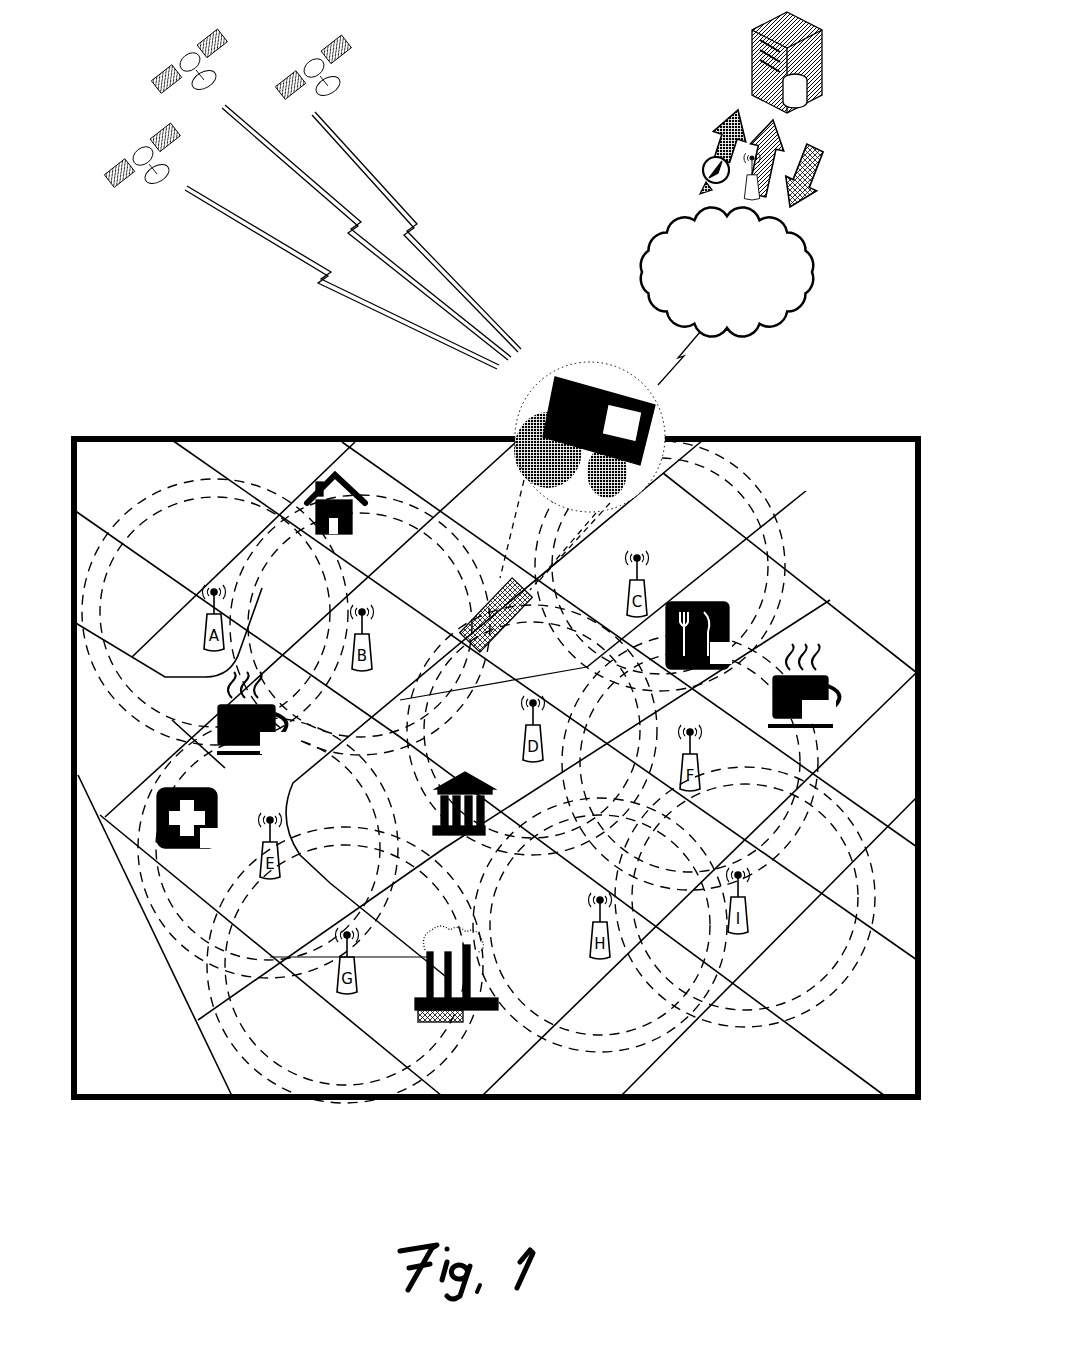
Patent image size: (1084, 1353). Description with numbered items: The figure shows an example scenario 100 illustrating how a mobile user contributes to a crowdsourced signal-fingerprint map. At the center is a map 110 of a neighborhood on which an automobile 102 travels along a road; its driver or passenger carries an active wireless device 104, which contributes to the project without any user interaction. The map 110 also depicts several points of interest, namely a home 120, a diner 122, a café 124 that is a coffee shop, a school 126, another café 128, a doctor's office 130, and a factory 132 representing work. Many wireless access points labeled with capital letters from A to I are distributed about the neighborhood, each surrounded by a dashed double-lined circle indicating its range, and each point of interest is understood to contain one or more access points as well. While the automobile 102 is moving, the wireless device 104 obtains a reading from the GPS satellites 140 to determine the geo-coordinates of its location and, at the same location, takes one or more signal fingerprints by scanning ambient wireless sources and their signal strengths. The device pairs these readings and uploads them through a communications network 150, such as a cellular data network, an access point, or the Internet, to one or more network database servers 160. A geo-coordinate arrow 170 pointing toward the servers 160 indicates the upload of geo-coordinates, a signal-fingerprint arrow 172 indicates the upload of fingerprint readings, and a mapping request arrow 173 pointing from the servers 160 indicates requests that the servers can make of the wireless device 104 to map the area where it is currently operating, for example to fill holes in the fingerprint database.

The example scenario 100 is at (205, 1222).
The automobile 102 is at (518, 648).
The wireless device 104 is at (656, 476).
The map 110 is at (815, 488).
The home 120 is at (387, 523).
The diner 122 is at (744, 660).
The café 124 is at (835, 719).
The school 126 is at (514, 833).
The café 128 is at (294, 753).
The doctor's office 130 is at (234, 848).
The factory 132 is at (502, 1031).
The GPS satellites 140 is at (238, 308).
The communications network 150 is at (745, 294).
The network database servers 160 is at (837, 69).
The geo-coordinate arrow 170 is at (708, 135).
The signal-fingerprint arrow 172 is at (782, 152).
The mapping request arrow 173 is at (810, 204).